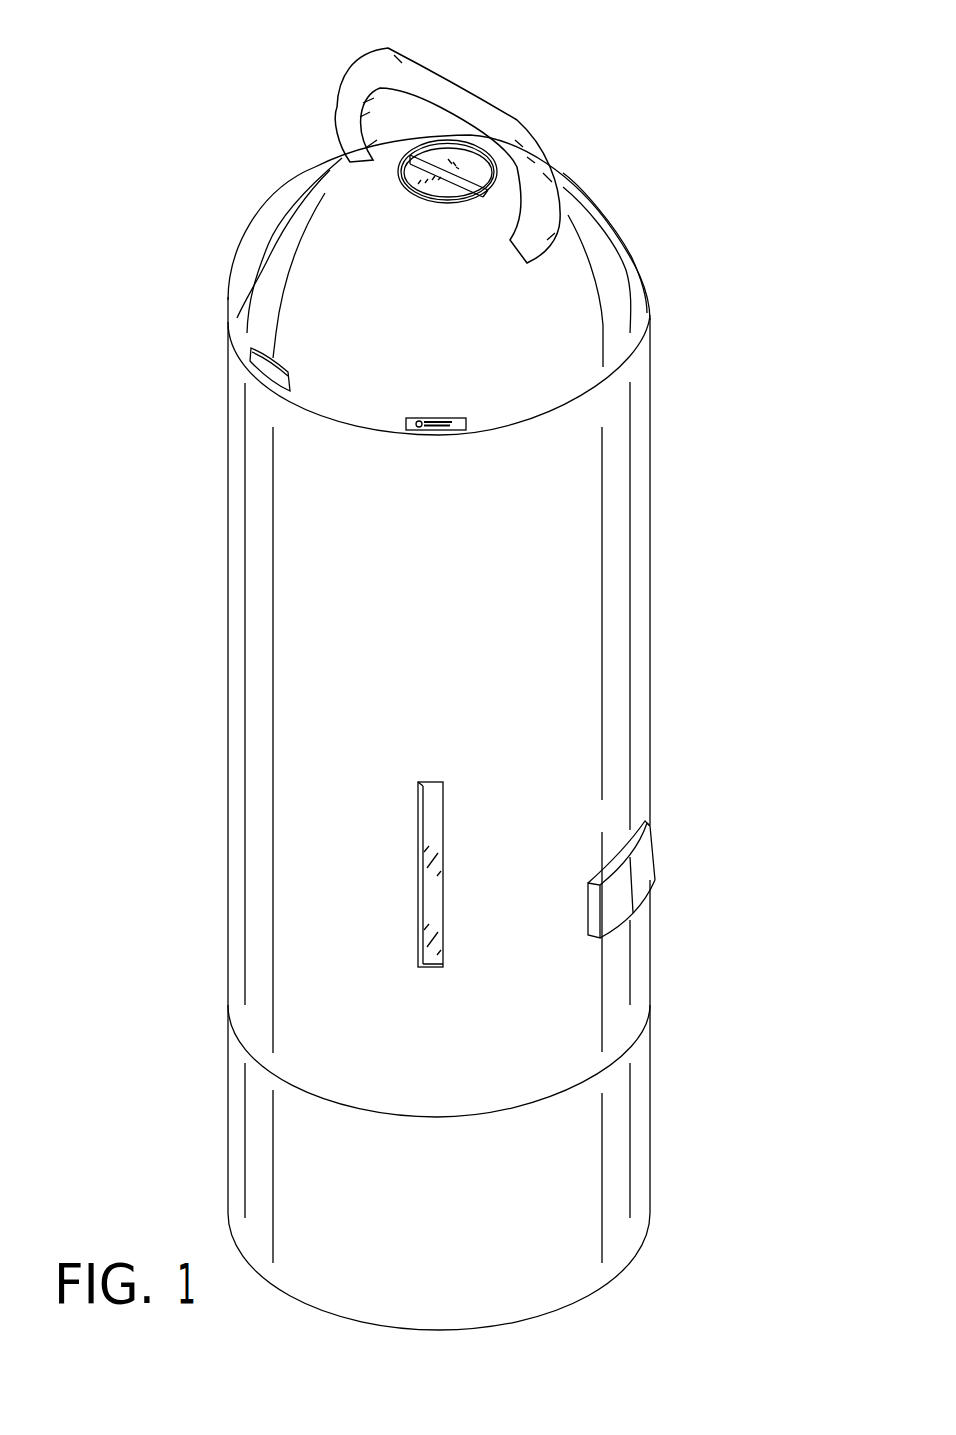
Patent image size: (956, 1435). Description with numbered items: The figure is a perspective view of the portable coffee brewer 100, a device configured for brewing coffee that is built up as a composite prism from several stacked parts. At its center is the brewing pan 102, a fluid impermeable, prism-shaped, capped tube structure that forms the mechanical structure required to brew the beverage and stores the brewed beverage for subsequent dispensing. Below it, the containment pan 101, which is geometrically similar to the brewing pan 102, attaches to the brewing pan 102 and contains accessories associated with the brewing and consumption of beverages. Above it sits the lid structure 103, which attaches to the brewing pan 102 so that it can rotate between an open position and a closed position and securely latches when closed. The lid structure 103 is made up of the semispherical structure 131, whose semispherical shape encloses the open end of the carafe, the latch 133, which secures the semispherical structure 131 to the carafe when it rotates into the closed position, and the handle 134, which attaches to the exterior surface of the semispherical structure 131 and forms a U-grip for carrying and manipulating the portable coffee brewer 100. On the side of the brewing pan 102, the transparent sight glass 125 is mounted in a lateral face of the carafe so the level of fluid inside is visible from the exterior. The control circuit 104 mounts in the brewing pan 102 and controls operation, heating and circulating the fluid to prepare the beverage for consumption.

The portable coffee brewer 100 is at (140, 132).
The containment pan 101 is at (655, 1143).
The brewing pan 102 is at (650, 586).
The lid structure 103 is at (648, 260).
The control circuit 104 is at (655, 863).
The sight glass 125 is at (445, 867).
The semispherical structure 131 is at (588, 255).
The latch 133 is at (265, 369).
The handle 134 is at (460, 95).